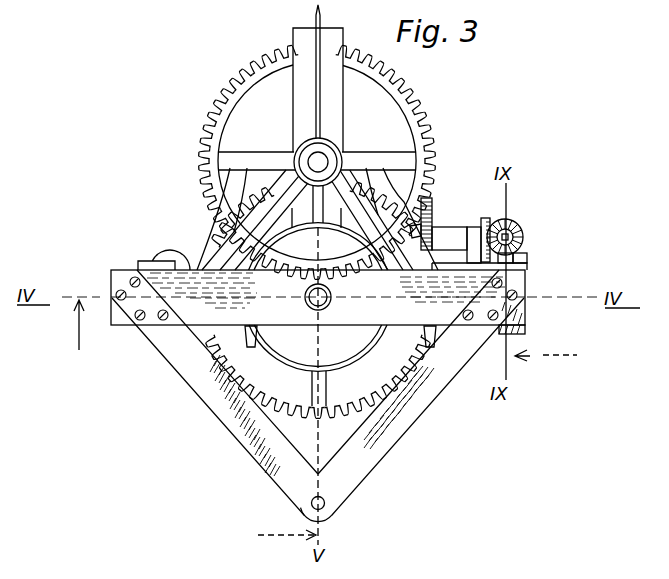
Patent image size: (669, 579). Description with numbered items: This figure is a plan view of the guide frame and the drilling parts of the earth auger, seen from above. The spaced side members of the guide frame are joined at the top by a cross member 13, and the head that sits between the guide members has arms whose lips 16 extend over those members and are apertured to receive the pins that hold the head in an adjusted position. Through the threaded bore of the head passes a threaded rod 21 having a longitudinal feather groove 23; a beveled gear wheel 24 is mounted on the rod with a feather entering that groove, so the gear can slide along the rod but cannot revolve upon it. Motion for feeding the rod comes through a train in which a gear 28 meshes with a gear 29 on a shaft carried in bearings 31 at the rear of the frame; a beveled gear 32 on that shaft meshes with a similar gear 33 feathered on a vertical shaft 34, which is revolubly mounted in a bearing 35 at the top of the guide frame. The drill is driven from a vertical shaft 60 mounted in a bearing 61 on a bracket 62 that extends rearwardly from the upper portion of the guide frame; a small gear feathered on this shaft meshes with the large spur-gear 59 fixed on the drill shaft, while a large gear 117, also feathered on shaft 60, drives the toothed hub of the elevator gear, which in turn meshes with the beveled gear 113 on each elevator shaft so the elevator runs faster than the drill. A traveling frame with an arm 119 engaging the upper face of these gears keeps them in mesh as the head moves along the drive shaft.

The large gear 117 is at (418, 104).
The arm 119 is at (308, 123).
The vertical shaft 60 is at (340, 145).
The bearing 61 is at (296, 143).
The bracket 62 is at (282, 178).
The spur-gear 59 is at (380, 190).
The cross member 13 is at (279, 273).
The lips 16 is at (156, 256).
The threaded rod 21 is at (305, 300).
The feather groove 23 is at (316, 312).
The beveled gear wheel 24 is at (290, 351).
The beveled gear 113 is at (250, 333).
The gear 28 is at (429, 348).
The gear 29 is at (433, 212).
The bearings 31 is at (473, 228).
The beveled gear 32 is at (488, 222).
The beveled gear 33 is at (519, 222).
The vertical shaft 34 is at (527, 240).
The bearing 35 is at (527, 259).